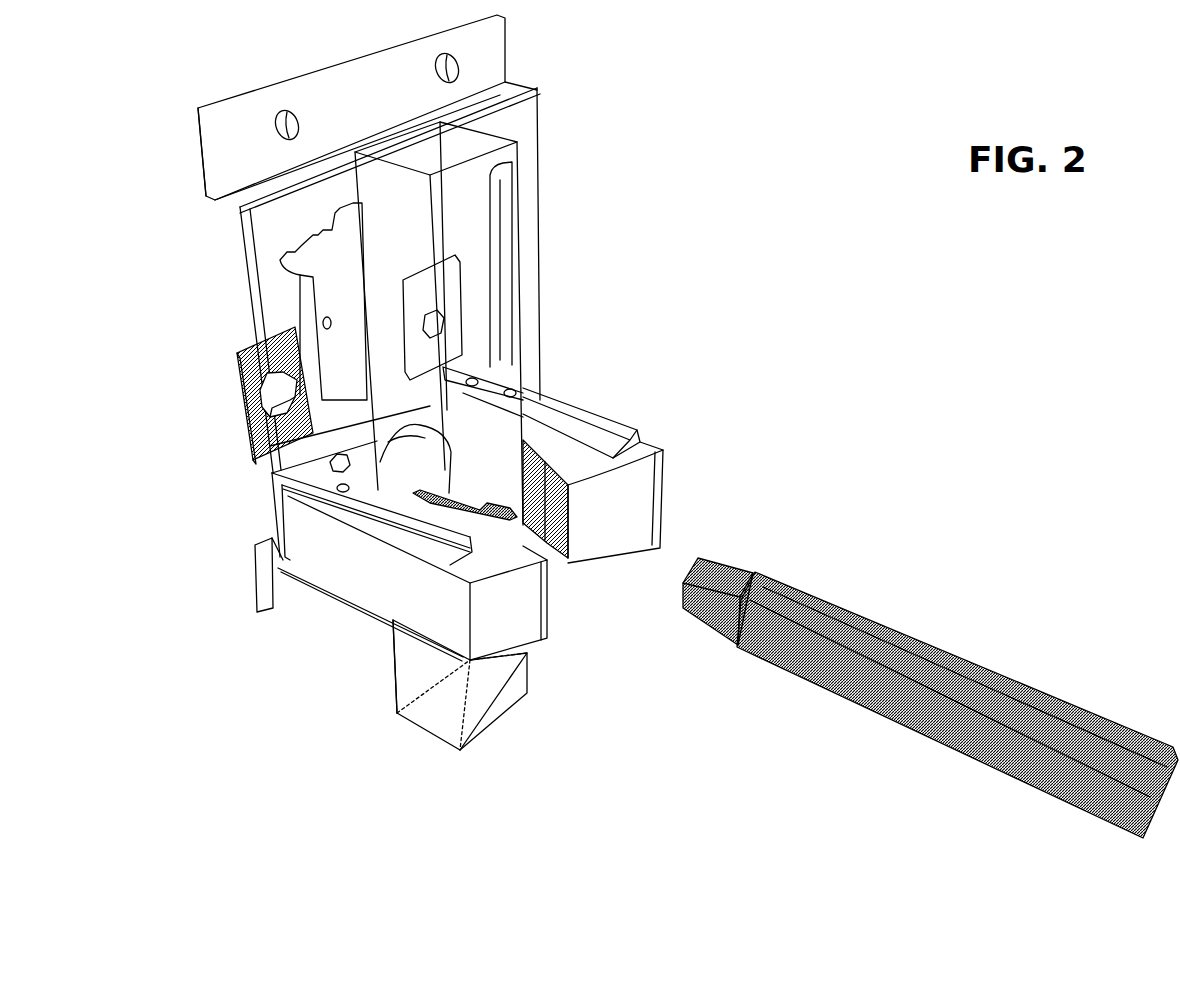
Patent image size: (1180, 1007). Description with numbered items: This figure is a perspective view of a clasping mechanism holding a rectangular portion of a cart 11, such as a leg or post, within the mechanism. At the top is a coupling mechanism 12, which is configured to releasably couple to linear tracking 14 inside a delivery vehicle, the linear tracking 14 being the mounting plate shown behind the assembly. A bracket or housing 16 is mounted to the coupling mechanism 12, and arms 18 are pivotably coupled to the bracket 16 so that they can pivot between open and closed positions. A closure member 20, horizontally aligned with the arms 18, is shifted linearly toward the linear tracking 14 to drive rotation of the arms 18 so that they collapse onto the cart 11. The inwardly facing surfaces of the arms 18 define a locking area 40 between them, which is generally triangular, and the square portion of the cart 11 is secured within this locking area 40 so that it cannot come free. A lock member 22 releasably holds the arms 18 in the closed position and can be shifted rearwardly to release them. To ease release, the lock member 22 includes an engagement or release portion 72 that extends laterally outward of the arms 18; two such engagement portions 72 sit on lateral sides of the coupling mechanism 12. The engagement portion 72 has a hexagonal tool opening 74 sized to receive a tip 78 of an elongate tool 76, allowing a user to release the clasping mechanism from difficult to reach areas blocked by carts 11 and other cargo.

The cart 11 is at (480, 700).
The coupling mechanism 12 is at (320, 297).
The linear tracking 14 is at (492, 53).
The bracket or housing 16 is at (293, 468).
The arms 18 is at (640, 458).
The closure member 20 is at (378, 487).
The lock member 22 is at (270, 446).
The locking area 40 is at (491, 490).
The engagement or release portion 72 is at (252, 353).
The tool opening or recess 74 is at (283, 412).
The tool 76 is at (1028, 773).
The tip 78 is at (707, 613).